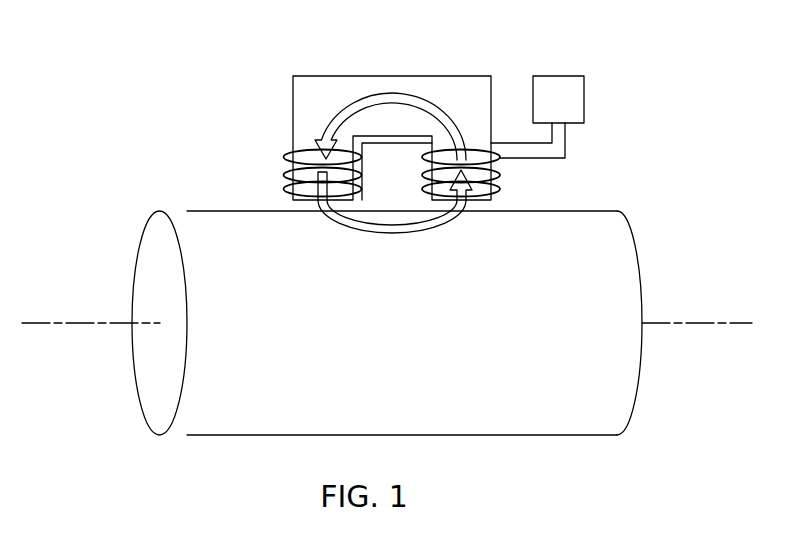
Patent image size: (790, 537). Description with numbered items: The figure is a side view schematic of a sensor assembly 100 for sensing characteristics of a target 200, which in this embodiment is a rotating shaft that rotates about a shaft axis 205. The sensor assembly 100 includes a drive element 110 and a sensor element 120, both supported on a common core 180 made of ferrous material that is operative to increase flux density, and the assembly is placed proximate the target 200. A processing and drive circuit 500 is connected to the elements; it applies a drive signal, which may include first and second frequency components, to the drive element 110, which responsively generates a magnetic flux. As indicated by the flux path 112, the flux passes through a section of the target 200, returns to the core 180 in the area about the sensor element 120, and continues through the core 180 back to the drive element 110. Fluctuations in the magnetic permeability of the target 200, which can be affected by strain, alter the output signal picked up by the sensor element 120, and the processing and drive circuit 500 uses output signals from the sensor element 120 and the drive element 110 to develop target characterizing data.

The sensor assembly 100 is at (438, 142).
The drive element 110 is at (290, 153).
The magnetic flux path 112 is at (416, 90).
The sensor element 120 is at (503, 187).
The core 180 is at (318, 76).
The target 200 is at (608, 209).
The shaft axis 205 is at (92, 326).
The processing and drive circuit 500 is at (576, 110).